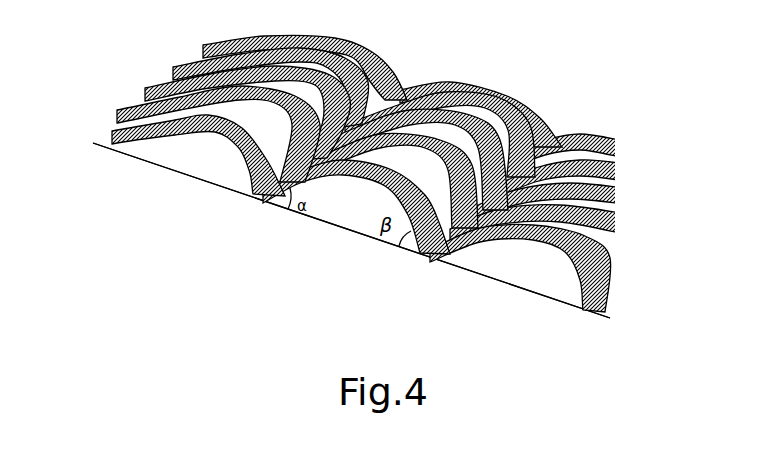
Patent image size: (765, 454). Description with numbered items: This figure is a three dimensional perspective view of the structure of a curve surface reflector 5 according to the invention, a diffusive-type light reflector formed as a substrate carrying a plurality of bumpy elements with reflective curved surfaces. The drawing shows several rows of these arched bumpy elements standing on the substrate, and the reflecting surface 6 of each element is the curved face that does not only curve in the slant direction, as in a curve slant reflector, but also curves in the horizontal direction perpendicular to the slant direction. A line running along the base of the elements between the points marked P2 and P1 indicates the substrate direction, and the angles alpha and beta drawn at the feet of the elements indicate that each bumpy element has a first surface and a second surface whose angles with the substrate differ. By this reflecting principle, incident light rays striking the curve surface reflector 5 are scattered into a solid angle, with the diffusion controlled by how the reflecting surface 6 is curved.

The curve surface reflector 5 is at (227, 172).
The reflecting surface 6 is at (530, 100).
The reference plane P1 is at (367, 237).
The reference plane P2 is at (334, 226).